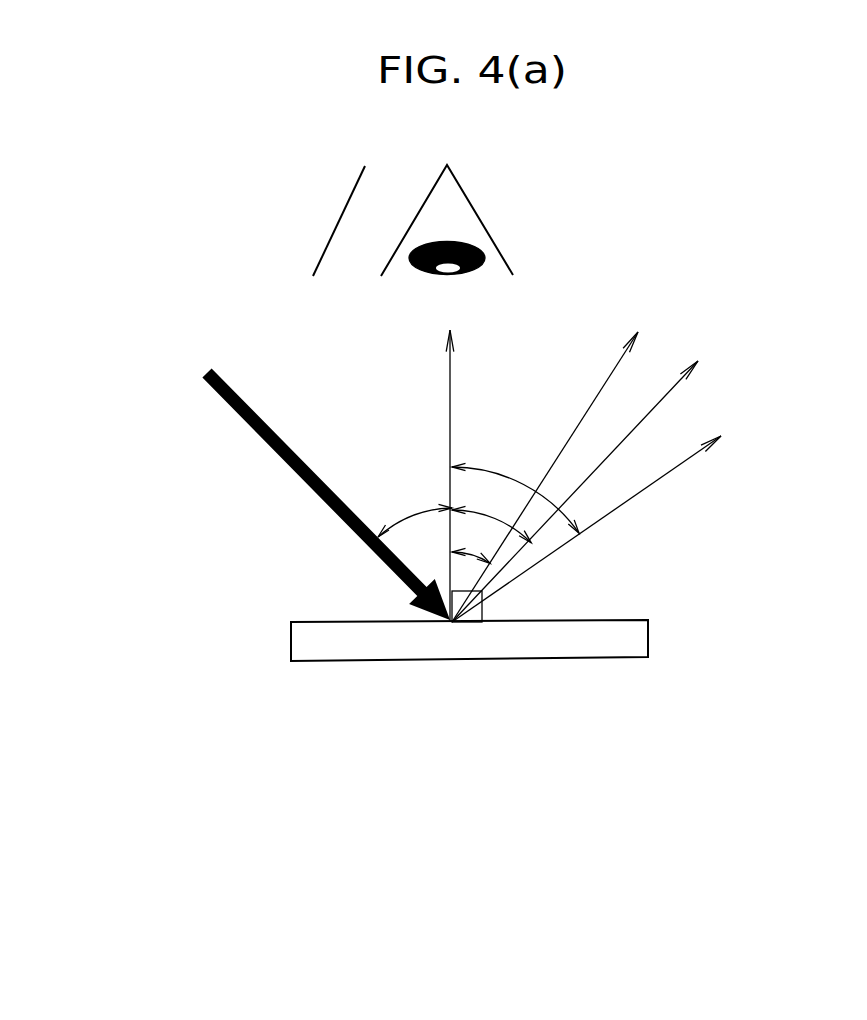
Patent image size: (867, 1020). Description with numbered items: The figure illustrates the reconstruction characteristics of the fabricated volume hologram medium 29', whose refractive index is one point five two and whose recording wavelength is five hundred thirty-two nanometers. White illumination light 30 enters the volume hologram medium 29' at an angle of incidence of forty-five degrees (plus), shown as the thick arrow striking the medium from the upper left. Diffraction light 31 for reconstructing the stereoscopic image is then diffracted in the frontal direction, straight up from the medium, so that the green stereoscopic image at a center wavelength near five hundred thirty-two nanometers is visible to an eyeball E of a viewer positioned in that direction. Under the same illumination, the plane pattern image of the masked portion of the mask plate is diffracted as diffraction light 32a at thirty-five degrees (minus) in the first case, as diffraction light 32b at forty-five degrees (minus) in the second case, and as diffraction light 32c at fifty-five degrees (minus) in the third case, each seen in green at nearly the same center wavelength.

The eyeball E is at (512, 195).
The volume hologram medium 29' is at (435, 641).
The white illumination light 30 is at (318, 495).
The diffraction light 31 is at (450, 387).
The diffraction light 32a is at (605, 382).
The diffraction light 32b is at (662, 403).
The diffraction light 32c is at (670, 471).